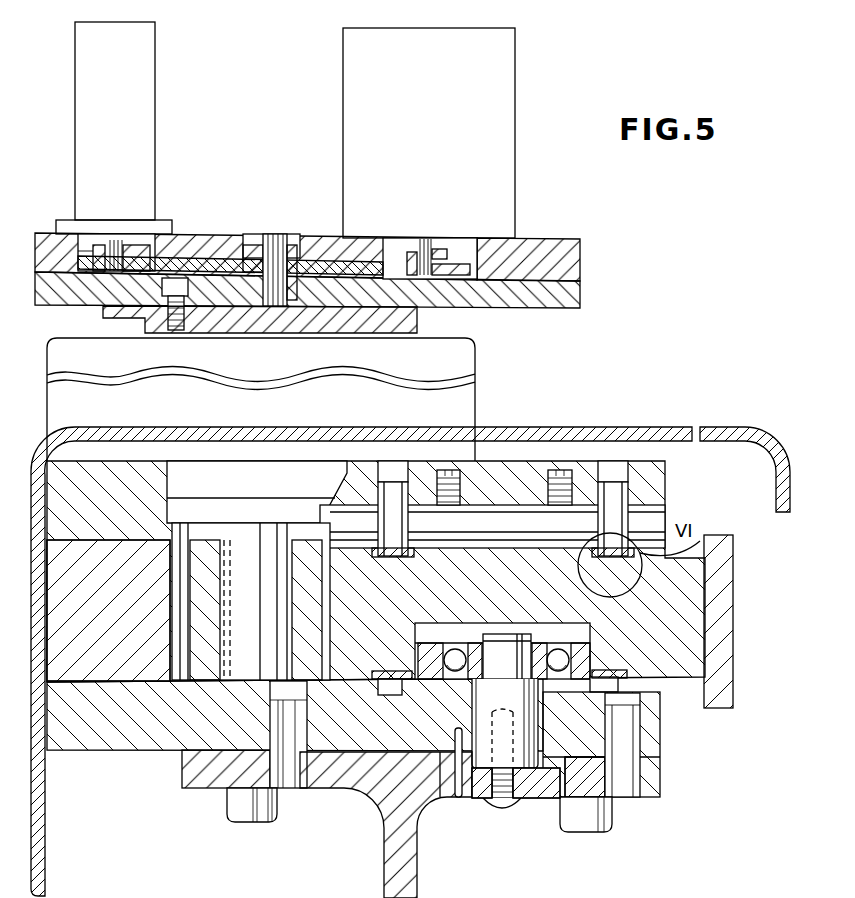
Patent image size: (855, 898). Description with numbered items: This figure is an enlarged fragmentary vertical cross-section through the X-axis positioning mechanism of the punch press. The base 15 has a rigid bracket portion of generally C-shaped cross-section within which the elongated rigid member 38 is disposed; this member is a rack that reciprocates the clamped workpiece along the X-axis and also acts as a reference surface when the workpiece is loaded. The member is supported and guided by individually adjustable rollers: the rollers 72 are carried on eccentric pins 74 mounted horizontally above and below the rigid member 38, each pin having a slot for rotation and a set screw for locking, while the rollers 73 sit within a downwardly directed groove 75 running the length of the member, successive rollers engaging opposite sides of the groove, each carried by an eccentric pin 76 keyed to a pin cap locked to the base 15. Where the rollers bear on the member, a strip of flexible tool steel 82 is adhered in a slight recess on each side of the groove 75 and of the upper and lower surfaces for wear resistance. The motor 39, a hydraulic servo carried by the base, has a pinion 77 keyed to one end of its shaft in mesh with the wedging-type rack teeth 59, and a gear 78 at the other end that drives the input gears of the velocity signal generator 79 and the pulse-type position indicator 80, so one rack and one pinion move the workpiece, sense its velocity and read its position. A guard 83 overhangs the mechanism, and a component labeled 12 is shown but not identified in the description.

The bolt 12 is at (393, 494).
The base 15 is at (380, 871).
The elongated rigid member 38 is at (688, 662).
The motor 39 is at (478, 392).
The rack teeth 59 is at (318, 606).
The rollers 72 is at (614, 492).
The rollers 73 is at (428, 640).
The eccentric pins 74 is at (542, 519).
The downwardly directed groove 75 is at (560, 628).
The eccentric pin 76 is at (498, 657).
The pinion 77 is at (205, 637).
The gear 78 is at (208, 253).
The velocity signal generator 79 is at (146, 107).
The position indicator 80 is at (500, 104).
The strip of flexible tool steel 82 is at (392, 557).
The guard 83 is at (714, 428).